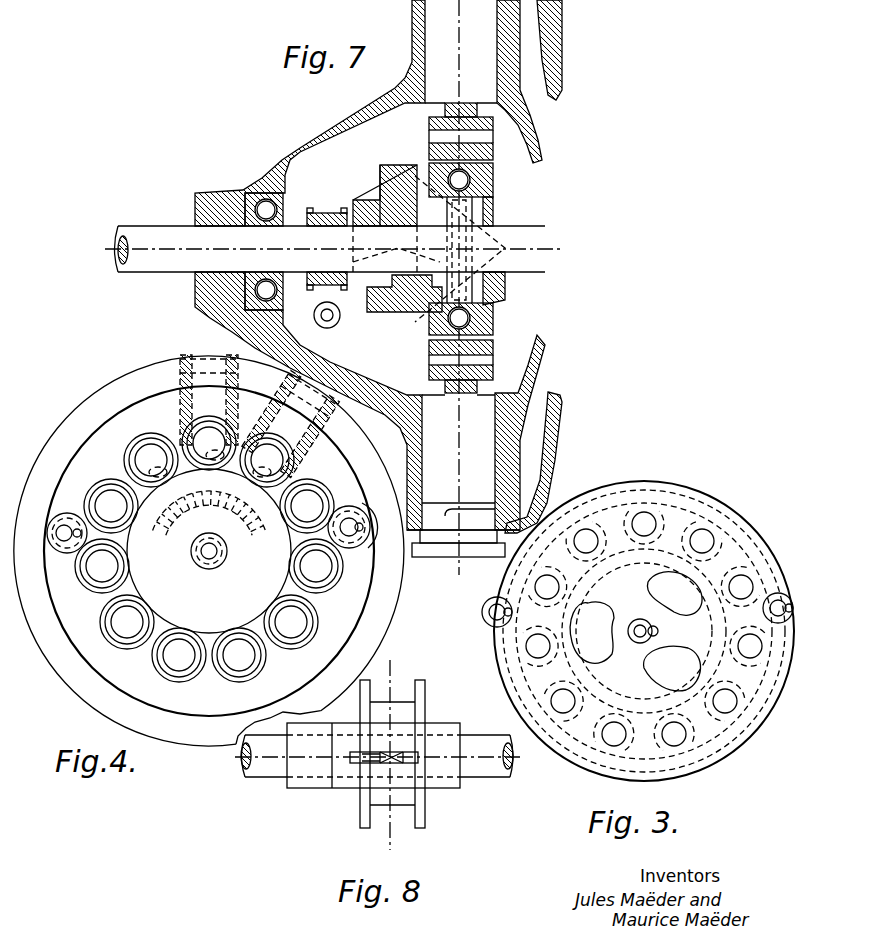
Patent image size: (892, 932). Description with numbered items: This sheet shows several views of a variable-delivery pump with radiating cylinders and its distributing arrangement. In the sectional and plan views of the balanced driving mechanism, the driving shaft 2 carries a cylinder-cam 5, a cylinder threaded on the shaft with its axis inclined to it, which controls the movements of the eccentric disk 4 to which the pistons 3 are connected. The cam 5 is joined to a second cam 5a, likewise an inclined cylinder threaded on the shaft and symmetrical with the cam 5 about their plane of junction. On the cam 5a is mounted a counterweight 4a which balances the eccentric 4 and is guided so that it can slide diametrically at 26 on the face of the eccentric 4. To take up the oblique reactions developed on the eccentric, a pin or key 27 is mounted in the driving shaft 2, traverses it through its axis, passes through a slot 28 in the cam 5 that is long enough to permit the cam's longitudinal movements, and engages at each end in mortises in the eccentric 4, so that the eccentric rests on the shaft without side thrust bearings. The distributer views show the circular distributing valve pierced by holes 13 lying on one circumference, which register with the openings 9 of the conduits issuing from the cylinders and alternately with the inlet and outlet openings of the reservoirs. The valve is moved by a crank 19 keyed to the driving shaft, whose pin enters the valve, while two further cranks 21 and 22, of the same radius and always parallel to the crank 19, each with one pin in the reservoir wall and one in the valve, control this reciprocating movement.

In FIG. 7, the driving shaft 2 is at (161, 260).
In FIG. 8, the driving shaft 2 is at (268, 775).
In FIG. 7, the piston 3 is at (440, 11).
In FIG. 7, the eccentric disk 4 is at (433, 183).
In FIG. 8, the eccentric disk 4 is at (364, 688).
In FIG. 7, the counterweight 4a is at (375, 314).
In FIG. 7, the cam 5 is at (500, 286).
In FIG. 8, the cam 5 is at (452, 772).
In FIG. 7, the cam 5a is at (360, 196).
In FIG. 4, the opening 9 is at (193, 424).
In FIG. 3, the hole 13 is at (572, 702).
In FIG. 4, the crank 19 is at (211, 562).
In FIG. 4, the crank 21 is at (352, 520).
In FIG. 4, the crank 22 is at (66, 540).
In FIG. 7, the diametrical sliding guide 26 is at (446, 320).
In FIG. 7, the pin or key 27 is at (476, 232).
In FIG. 8, the pin or key 27 is at (418, 752).
In FIG. 8, the slot 28 is at (355, 764).